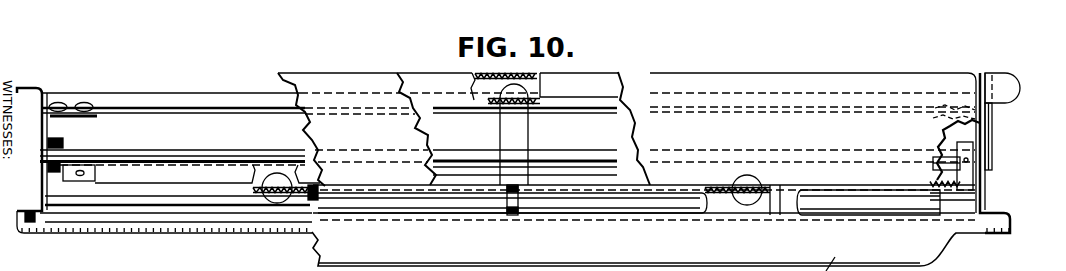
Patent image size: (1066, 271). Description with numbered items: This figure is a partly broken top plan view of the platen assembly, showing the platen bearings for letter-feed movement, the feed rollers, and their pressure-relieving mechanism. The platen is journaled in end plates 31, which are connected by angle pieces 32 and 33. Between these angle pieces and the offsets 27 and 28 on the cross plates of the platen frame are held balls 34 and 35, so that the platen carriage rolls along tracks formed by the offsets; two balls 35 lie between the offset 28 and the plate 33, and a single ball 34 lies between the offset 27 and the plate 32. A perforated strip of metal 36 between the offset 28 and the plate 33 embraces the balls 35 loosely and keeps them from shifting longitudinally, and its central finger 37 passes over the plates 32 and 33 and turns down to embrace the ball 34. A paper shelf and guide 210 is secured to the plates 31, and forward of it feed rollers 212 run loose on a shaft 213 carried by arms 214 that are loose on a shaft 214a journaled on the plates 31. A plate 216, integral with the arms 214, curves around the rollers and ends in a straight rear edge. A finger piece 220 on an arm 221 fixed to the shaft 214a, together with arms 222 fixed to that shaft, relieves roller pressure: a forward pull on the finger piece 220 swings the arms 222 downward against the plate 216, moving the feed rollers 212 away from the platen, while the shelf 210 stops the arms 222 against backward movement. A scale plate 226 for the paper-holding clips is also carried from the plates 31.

The offset 27 is at (597, 80).
The offset 28 is at (178, 197).
The plate 31 is at (41, 131).
The angle piece 32 is at (182, 98).
The angle piece 33 is at (155, 172).
The ball 34 is at (570, 60).
The ball 35 is at (272, 180).
The strip of metal 36 is at (765, 202).
The finger 37 is at (522, 138).
The paper shelf and guide 210 is at (320, 77).
The feed rollers 212 is at (593, 203).
The shaft 213 is at (957, 207).
The arms 214 is at (973, 182).
The shaft 214a is at (947, 153).
The plate 216 is at (970, 192).
The finger piece 220 is at (1017, 87).
The arm 221 is at (987, 128).
The arm 222 is at (973, 152).
The scale plate 226 is at (118, 227).